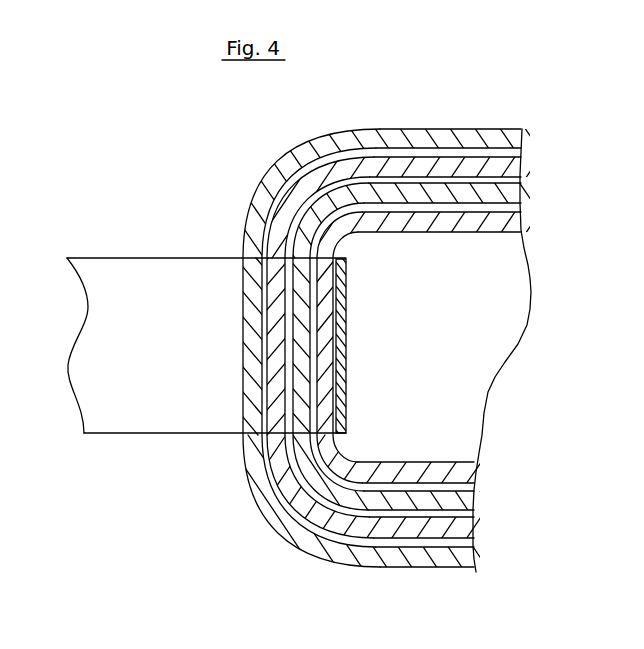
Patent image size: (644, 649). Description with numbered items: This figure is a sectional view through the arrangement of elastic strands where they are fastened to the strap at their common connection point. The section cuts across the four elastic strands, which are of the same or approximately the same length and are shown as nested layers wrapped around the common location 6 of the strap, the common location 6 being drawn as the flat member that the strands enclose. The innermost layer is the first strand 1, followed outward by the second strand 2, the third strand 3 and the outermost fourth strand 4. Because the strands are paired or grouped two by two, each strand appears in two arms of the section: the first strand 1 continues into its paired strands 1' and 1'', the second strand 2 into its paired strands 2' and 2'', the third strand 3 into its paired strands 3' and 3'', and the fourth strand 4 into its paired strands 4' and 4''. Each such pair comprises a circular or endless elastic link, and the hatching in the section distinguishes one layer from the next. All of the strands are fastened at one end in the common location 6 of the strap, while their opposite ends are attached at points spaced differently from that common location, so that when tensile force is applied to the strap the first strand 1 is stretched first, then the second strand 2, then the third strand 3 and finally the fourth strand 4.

The first elastic strand 1 is at (277, 377).
The strand of the first pair of elastic strands 1' is at (379, 166).
The strand of the first pair of elastic strands 1'' is at (352, 530).
The second elastic strand 2 is at (274, 346).
The strand of the second pair of elastic strands 2' is at (375, 166).
The strand of the second pair of elastic strands 2'' is at (363, 530).
The third elastic strand 3 is at (284, 338).
The strand of the third pair of elastic strands 3' is at (392, 166).
The strand of the third pair of elastic strands 3'' is at (365, 530).
The fourth elastic strand 4 is at (279, 348).
The strand of the fourth pair of elastic strands 4' is at (393, 166).
The strand of the fourth pair of elastic strands 4'' is at (356, 530).
The common location of the strap 6 is at (160, 275).